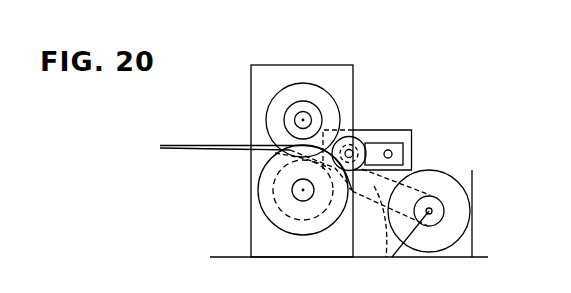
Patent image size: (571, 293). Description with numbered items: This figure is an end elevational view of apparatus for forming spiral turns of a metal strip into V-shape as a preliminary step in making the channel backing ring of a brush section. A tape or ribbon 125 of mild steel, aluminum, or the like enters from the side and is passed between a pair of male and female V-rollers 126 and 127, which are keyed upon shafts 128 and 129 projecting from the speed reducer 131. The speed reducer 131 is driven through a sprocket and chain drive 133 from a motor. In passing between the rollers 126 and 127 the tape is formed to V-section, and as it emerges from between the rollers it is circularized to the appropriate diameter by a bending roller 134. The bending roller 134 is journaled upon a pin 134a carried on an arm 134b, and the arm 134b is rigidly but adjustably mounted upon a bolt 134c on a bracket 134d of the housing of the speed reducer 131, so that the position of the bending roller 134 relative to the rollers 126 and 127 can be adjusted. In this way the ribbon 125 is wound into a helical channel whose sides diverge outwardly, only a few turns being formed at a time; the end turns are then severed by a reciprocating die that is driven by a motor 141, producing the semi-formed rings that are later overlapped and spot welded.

The ribbon 125 is at (203, 151).
The male V-roller 126 is at (327, 92).
The female V-roller 127 is at (316, 234).
The shaft 128 is at (295, 121).
The shaft 129 is at (293, 192).
The speed reducer 131 is at (251, 88).
The sprocket and chain drive 133 is at (386, 258).
The bending roller 134 is at (357, 137).
The pin 134a is at (351, 152).
The arm 134b is at (411, 136).
The bolt 134c is at (393, 154).
The bracket 134d is at (406, 128).
The motor 141 is at (443, 178).